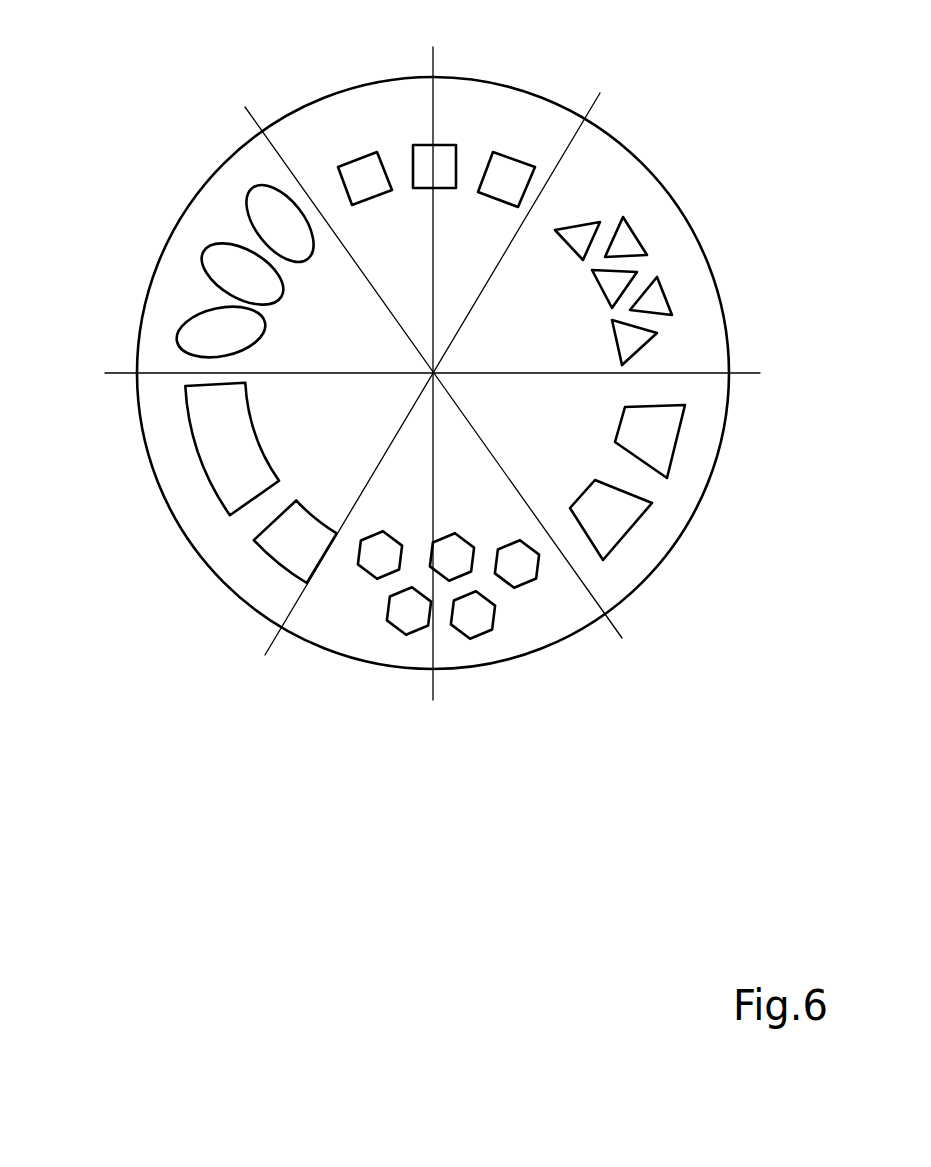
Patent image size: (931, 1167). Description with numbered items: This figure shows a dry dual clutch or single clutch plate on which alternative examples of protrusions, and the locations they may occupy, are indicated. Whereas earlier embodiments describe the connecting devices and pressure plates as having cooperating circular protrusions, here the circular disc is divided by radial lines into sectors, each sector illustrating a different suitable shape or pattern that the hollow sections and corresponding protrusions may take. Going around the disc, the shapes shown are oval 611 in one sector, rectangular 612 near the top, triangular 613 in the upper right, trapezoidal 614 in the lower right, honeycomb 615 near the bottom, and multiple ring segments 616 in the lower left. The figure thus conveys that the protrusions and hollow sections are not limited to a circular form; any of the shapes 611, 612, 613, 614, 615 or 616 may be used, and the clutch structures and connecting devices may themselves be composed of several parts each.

The oval protrusions 611 is at (233, 268).
The rectangular protrusions 612 is at (428, 157).
The triangular protrusions 613 is at (625, 243).
The trapezoidal protrusions 614 is at (612, 518).
The honeycomb protrusions 615 is at (400, 615).
The multiple ring segment protrusions 616 is at (223, 438).